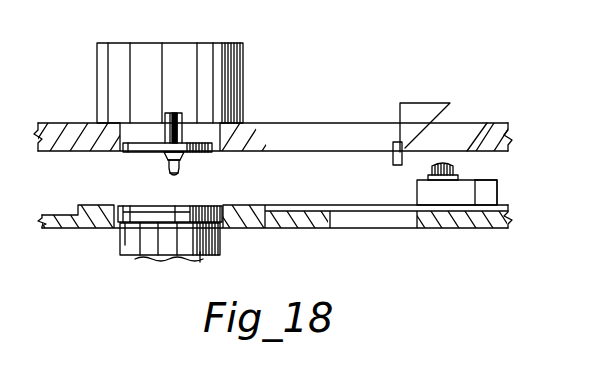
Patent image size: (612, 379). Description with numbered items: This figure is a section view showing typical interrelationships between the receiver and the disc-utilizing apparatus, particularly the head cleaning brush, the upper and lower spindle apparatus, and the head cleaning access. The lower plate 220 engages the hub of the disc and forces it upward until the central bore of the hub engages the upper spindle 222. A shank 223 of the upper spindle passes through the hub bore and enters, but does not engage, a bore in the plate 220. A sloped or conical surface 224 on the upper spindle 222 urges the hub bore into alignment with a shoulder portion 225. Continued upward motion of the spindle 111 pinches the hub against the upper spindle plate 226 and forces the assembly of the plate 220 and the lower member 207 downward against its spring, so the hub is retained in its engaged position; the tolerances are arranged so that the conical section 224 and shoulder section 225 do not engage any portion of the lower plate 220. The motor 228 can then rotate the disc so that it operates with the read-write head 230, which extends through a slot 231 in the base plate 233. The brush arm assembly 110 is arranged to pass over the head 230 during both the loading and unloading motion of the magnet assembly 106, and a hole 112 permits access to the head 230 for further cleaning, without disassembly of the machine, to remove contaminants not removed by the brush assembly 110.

The magnet assembly 106 is at (487, 193).
The brush arm assembly 110 is at (467, 173).
The spindle 111 is at (219, 264).
The hole 112 is at (370, 220).
The assembly 207 is at (132, 238).
The plate 220 is at (150, 212).
The upper spindle 222 is at (200, 123).
The shank 223 is at (175, 173).
The conical surface 224 is at (179, 162).
The shoulder portion 225 is at (167, 155).
The upper spindle plate 226 is at (137, 147).
The motor 228 is at (223, 70).
The read-write head 230 is at (397, 165).
The slot 231 is at (368, 93).
The base plate 233 is at (495, 132).